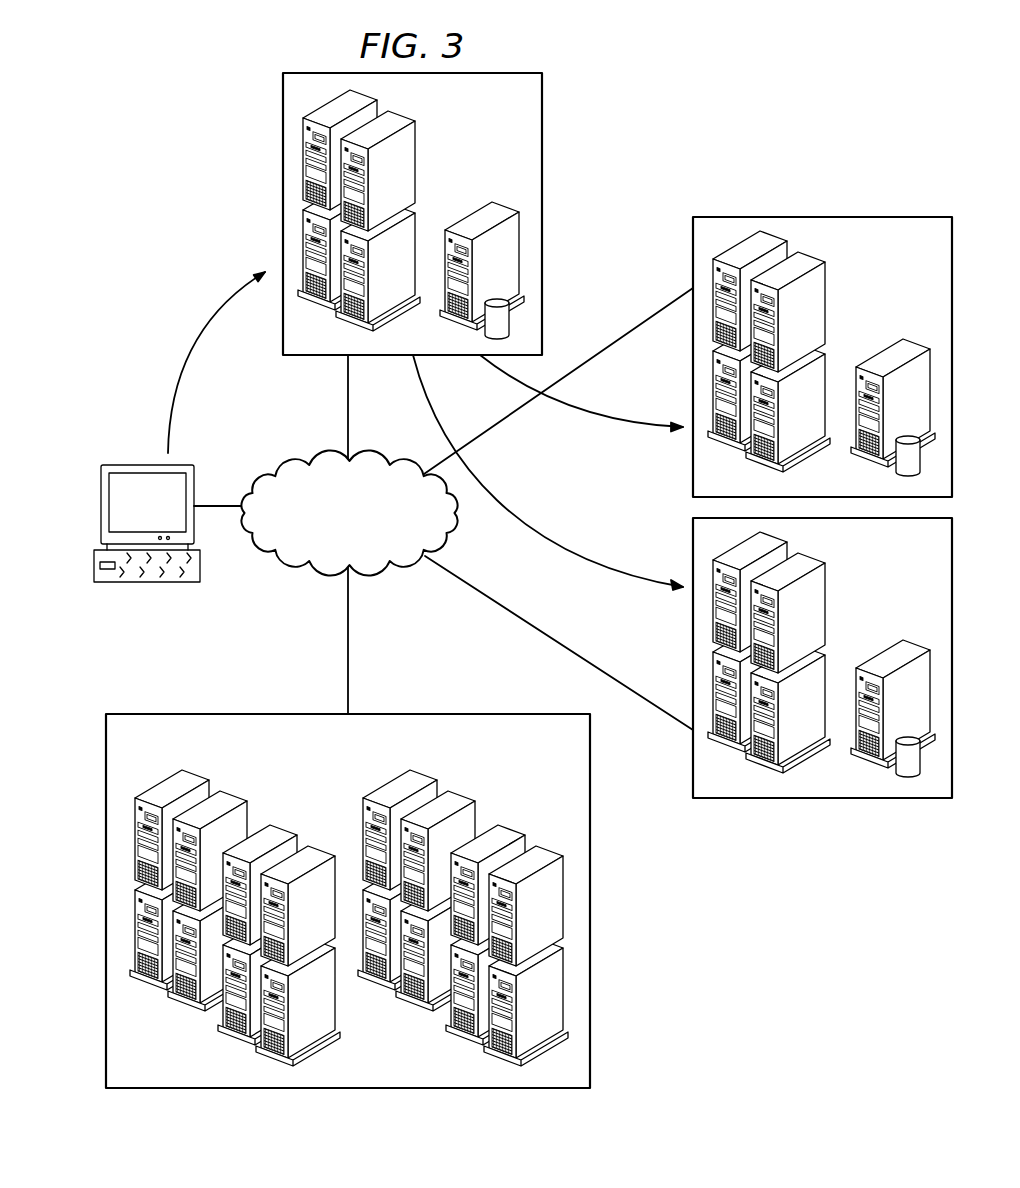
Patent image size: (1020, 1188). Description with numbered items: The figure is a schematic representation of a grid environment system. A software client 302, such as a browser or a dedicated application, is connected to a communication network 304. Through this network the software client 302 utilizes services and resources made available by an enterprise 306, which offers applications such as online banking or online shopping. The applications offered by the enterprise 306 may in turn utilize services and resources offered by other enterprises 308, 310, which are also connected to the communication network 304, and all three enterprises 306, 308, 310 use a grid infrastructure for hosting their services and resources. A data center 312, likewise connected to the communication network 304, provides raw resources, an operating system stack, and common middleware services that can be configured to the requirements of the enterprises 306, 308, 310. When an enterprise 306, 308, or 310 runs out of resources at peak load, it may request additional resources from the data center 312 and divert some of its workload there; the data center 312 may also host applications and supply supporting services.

The software client 302 is at (125, 465).
The communication network 304 is at (267, 468).
The enterprise 306 is at (283, 128).
The enterprise 308 is at (822, 217).
The enterprise 310 is at (822, 798).
The data center 312 is at (247, 1088).